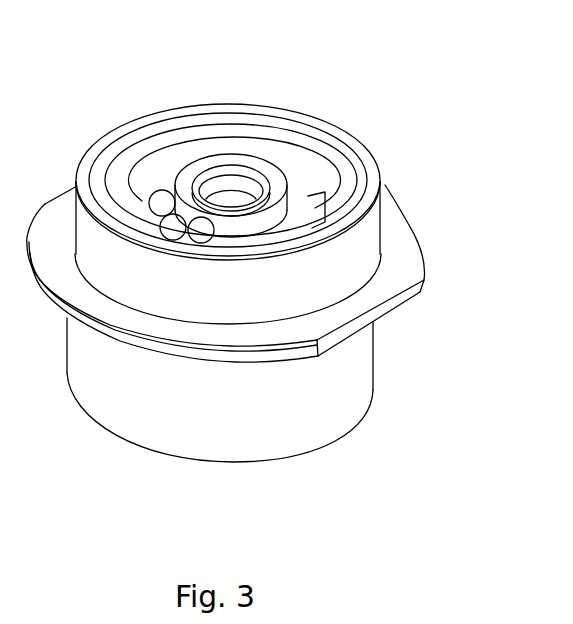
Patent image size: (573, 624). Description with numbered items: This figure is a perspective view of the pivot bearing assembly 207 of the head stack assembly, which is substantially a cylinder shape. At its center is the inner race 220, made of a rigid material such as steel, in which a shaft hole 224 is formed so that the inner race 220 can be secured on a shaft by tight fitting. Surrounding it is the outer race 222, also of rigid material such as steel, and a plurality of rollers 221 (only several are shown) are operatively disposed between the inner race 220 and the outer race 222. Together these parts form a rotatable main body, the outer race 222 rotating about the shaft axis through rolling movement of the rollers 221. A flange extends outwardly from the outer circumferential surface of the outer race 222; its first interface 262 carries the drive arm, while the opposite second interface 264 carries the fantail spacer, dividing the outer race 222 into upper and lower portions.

The pivot bearing assembly 207 is at (422, 367).
The inner race 220 is at (268, 178).
The rollers 221 is at (161, 198).
The outer race 222 is at (369, 168).
The shaft hole 224 is at (221, 178).
The first interface 262 is at (401, 249).
The second interface 264 is at (393, 313).